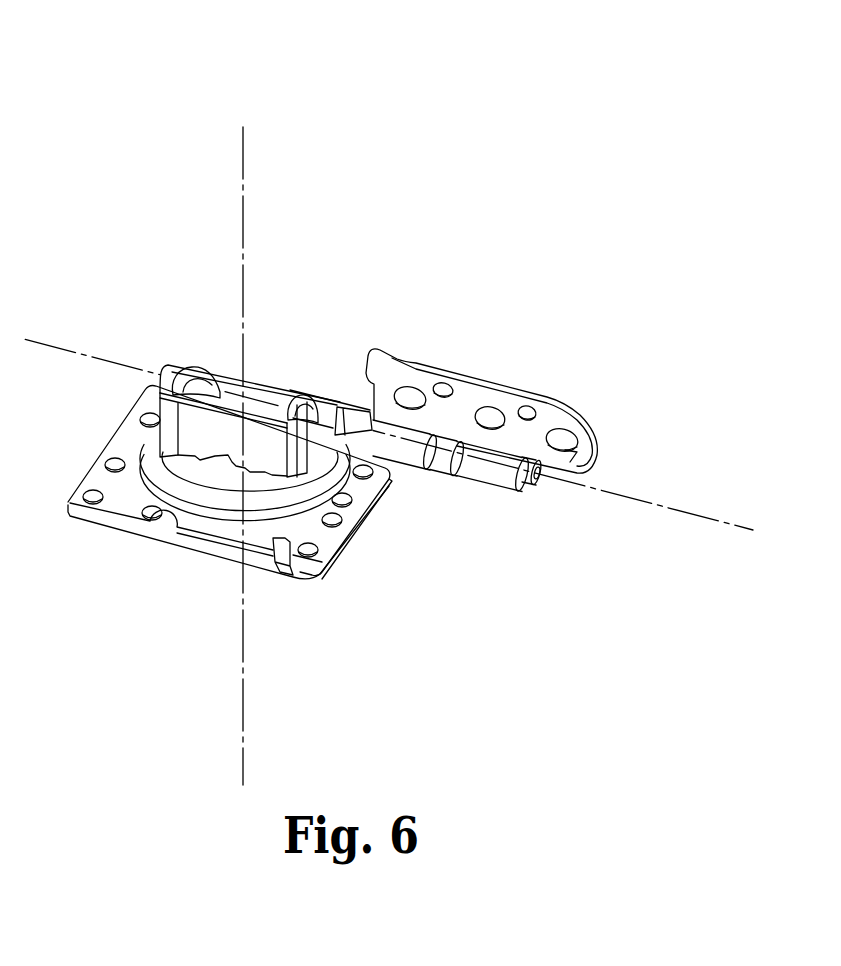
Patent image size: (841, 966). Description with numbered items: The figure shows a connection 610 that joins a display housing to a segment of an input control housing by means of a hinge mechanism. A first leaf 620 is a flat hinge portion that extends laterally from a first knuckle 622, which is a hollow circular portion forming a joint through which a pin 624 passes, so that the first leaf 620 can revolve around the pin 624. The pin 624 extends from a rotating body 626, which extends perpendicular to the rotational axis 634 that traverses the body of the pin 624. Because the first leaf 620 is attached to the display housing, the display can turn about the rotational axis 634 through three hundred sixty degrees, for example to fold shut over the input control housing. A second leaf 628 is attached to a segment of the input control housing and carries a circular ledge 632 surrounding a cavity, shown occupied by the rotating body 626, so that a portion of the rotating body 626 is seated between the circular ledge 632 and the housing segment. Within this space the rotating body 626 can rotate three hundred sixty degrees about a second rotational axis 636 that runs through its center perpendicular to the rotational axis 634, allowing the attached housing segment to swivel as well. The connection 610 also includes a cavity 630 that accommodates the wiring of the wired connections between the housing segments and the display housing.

The connection 610 is at (120, 76).
The first leaf 620 is at (582, 418).
The first knuckle 622 is at (478, 488).
The pin 624 is at (538, 482).
The rotating body 626 is at (168, 367).
The second leaf 628 is at (352, 512).
The cavity 630 is at (213, 370).
The circular ledge 632 is at (310, 512).
The rotational axis 634 is at (668, 508).
The rotational axis 636 is at (243, 146).